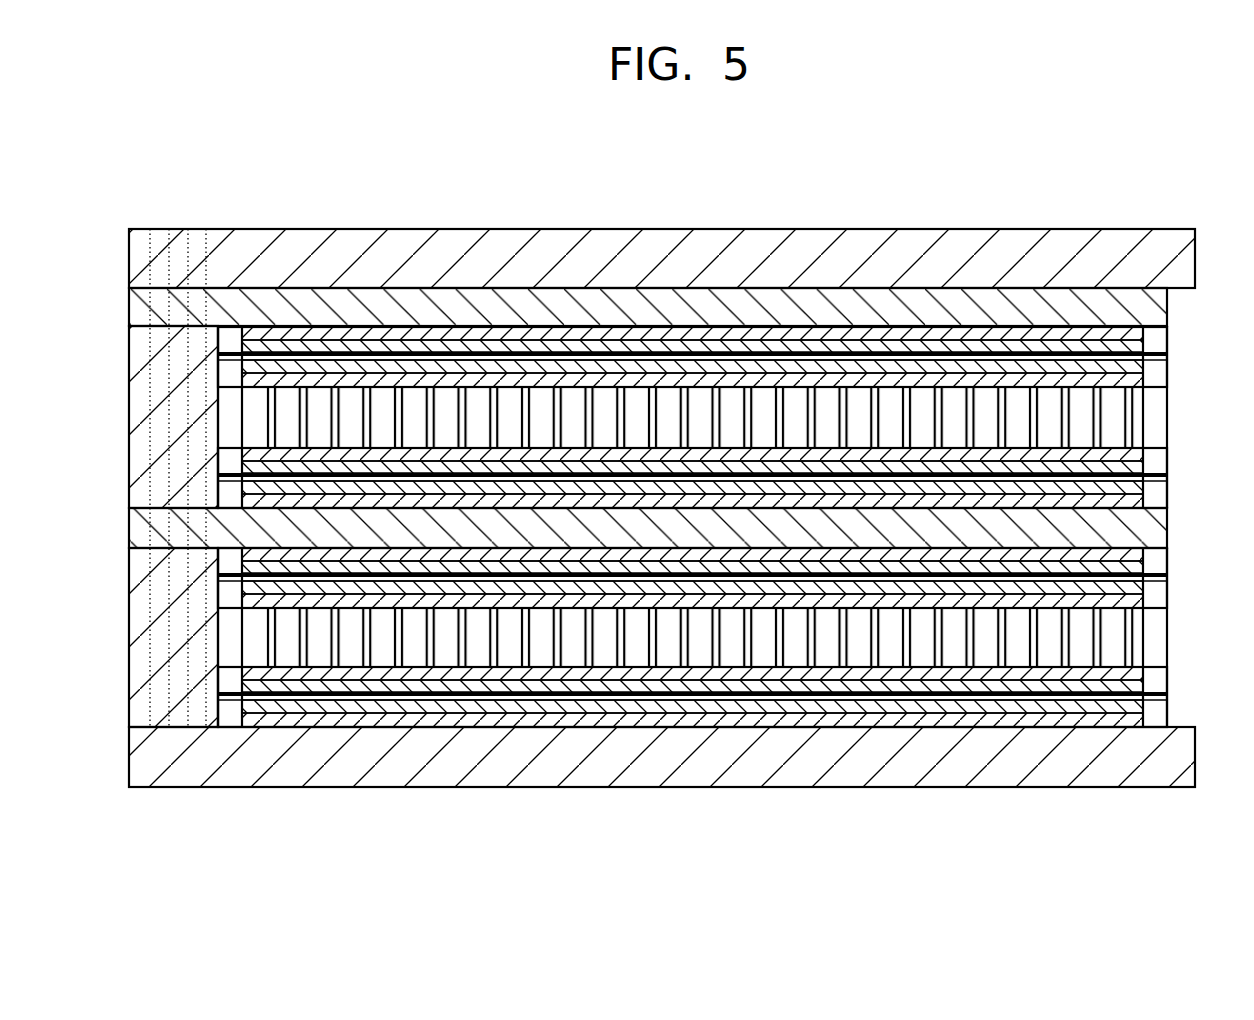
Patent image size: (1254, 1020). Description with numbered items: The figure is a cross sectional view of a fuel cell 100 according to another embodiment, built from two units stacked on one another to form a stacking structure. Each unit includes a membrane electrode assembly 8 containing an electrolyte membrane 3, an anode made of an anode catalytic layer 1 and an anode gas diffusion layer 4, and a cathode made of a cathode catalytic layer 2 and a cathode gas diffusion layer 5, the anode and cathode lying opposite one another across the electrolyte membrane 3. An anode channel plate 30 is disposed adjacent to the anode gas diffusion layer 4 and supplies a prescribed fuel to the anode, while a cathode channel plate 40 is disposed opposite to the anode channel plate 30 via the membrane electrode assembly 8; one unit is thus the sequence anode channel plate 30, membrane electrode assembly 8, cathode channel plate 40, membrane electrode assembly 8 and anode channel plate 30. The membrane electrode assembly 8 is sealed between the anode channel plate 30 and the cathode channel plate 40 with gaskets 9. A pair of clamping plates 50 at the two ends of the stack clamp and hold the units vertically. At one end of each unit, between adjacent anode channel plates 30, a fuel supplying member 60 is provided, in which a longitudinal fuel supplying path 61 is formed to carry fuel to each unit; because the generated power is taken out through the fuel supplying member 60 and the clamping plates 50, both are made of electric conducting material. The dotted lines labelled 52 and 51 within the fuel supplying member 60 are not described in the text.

The fuel cell 100 is at (1210, 178).
The clamping plate 50 is at (1190, 245).
The anode channel plate 30 is at (1160, 305).
The fuel supplying member 60 is at (129, 450).
The longitudinal fuel supplying path 61 is at (158, 638).
The outer layer of side wall 52 is at (160, 240).
The inner layer of side wall 51 is at (197, 240).
The cathode channel plate 40 is at (1160, 416).
The membrane electrode assembly 8 is at (1213, 325).
The gasket 9 is at (1150, 333).
The anode gas diffusion layer 4 is at (1150, 346).
The anode catalytic layer 1 is at (1150, 354).
The electrolyte membrane 3 is at (1150, 358).
The cathode catalytic layer 2 is at (1150, 367).
The cathode gas diffusion layer 5 is at (1150, 380).